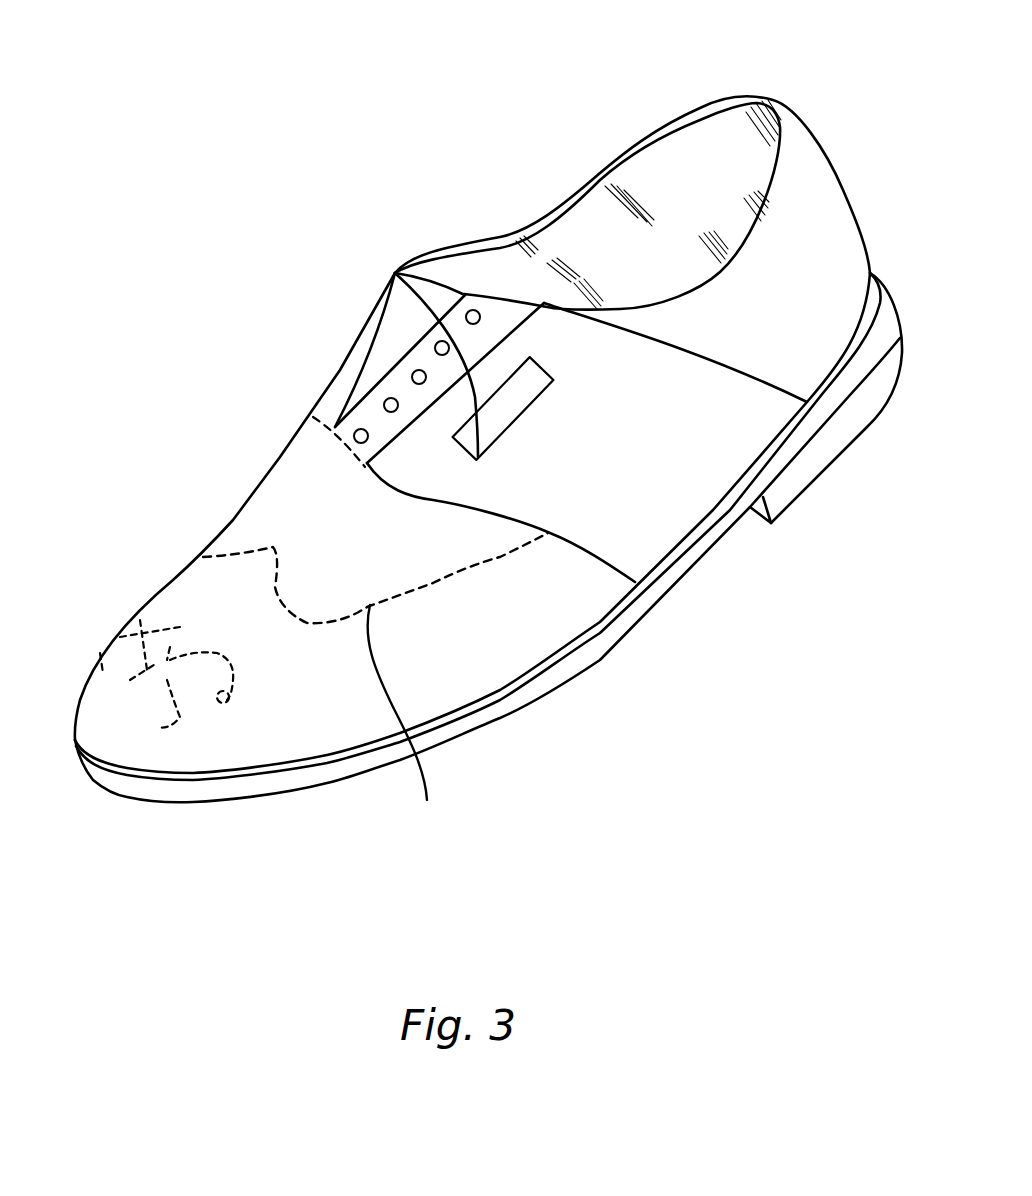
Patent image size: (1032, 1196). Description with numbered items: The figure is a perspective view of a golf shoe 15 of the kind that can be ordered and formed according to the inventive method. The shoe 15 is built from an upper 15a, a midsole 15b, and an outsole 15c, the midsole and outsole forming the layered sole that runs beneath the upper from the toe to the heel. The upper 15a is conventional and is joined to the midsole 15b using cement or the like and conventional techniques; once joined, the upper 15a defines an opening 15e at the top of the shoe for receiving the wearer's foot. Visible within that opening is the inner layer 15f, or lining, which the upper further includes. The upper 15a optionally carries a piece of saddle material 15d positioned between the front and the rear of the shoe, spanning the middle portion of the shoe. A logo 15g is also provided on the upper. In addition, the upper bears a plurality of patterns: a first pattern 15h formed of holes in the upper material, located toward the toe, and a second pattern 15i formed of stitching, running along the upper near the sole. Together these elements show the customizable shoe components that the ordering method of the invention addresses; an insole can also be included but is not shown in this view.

The golf shoe 15 is at (471, 461).
The upper 15a is at (142, 592).
The midsole 15b is at (710, 522).
The outsole 15c is at (270, 786).
The saddle material 15d is at (640, 527).
The opening 15e is at (593, 228).
The inner layer 15f is at (695, 170).
The logo 15g is at (395, 273).
The first pattern 15h is at (202, 712).
The second pattern 15i is at (375, 691).